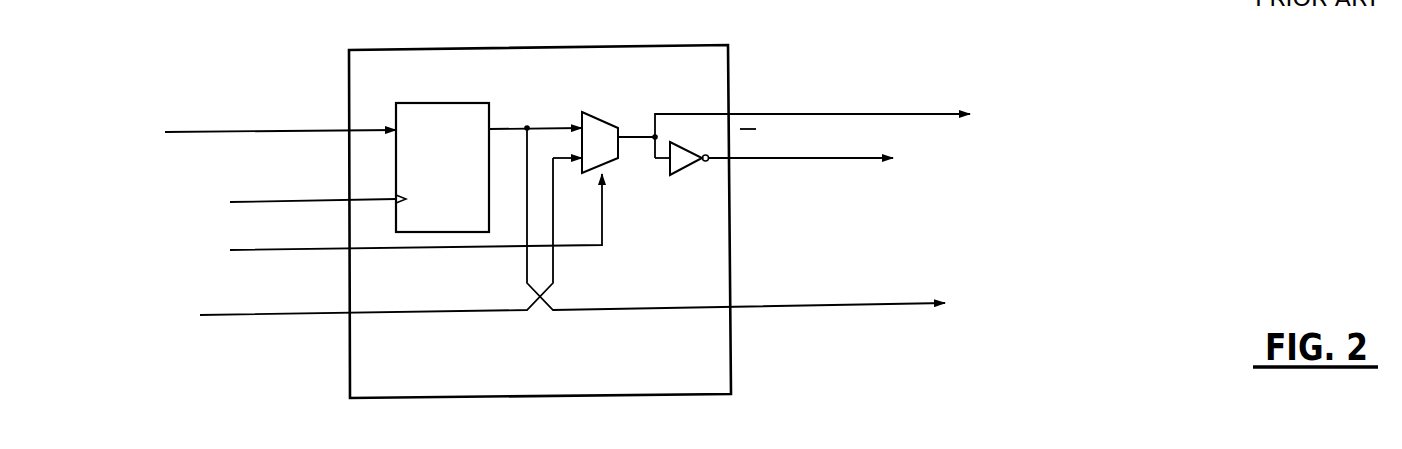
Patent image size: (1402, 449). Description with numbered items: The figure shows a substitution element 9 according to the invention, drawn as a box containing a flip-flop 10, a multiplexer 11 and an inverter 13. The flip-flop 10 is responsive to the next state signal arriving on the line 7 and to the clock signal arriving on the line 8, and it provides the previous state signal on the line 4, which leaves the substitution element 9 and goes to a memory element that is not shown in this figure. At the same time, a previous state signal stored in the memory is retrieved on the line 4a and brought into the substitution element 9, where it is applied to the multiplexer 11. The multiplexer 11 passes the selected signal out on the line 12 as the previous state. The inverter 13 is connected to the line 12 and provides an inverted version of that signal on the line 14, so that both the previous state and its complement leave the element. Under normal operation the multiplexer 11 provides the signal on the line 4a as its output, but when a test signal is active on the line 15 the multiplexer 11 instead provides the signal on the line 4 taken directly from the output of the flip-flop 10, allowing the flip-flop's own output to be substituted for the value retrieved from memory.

The line 4 is at (835, 311).
The line 4a is at (290, 318).
The line 7 is at (330, 128).
The line 8 is at (242, 199).
The substitution element 9 is at (583, 46).
The flip-flop 10 is at (451, 102).
The multiplexer 11 is at (597, 113).
The line 12 is at (912, 116).
The inverter 13 is at (689, 177).
The line 14 is at (834, 160).
The line 15 is at (460, 252).